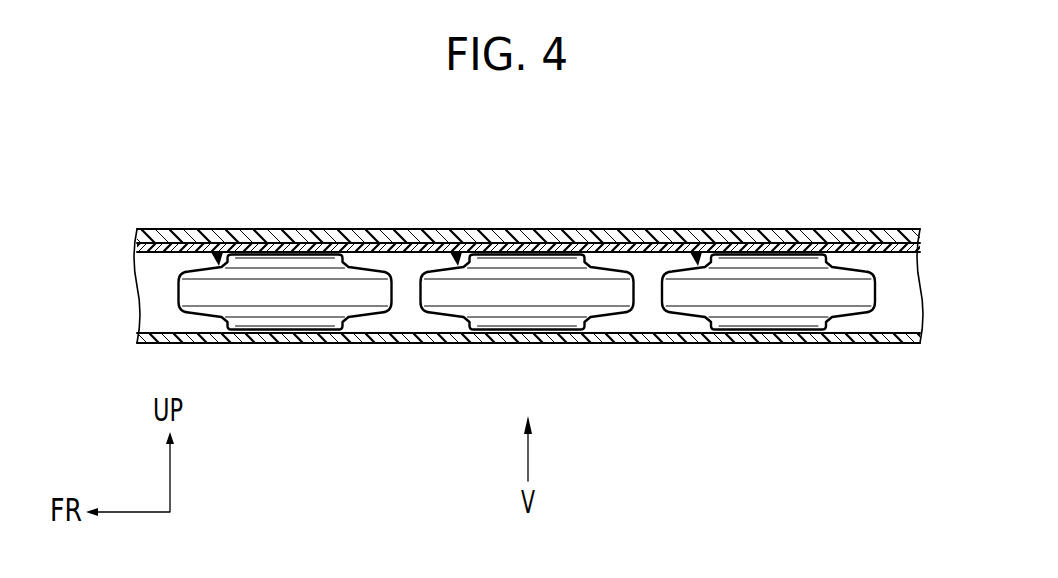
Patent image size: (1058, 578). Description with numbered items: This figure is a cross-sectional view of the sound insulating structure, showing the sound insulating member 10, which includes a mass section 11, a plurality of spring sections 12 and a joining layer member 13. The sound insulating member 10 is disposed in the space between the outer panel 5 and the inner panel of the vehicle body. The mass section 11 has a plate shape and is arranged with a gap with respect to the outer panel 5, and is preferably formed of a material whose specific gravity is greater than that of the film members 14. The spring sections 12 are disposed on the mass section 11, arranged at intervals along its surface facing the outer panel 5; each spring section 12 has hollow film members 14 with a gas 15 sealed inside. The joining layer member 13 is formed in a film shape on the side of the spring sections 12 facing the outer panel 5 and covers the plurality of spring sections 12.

The outer panel 5 is at (886, 229).
The sound insulating member 10 is at (815, 358).
The mass section 11 is at (906, 344).
The spring section 12 is at (214, 250).
The joining layer member 13 is at (404, 247).
The film member 14 is at (392, 300).
The gas 15 is at (285, 300).